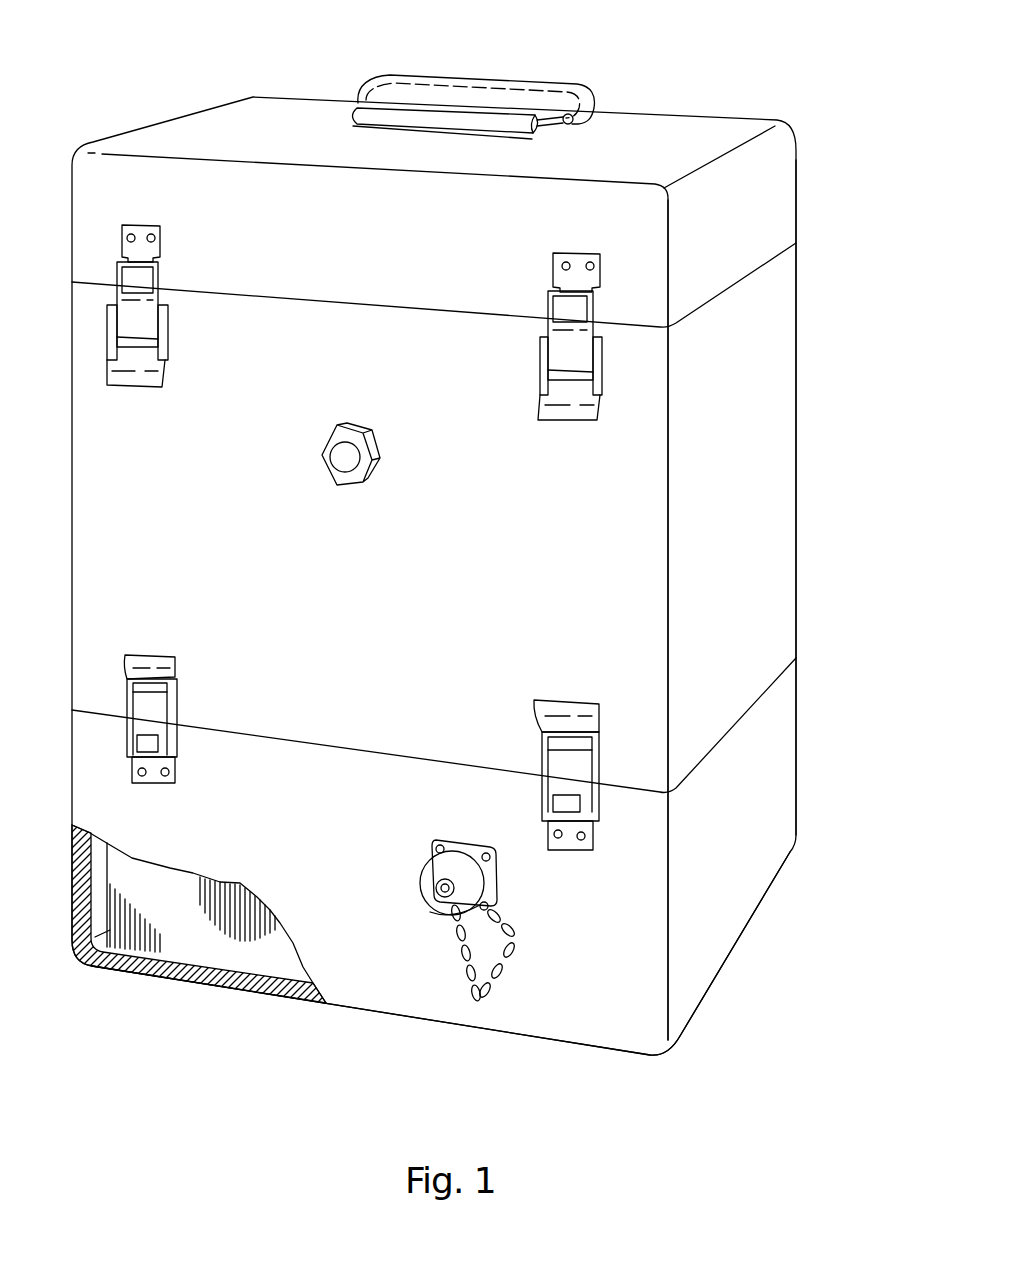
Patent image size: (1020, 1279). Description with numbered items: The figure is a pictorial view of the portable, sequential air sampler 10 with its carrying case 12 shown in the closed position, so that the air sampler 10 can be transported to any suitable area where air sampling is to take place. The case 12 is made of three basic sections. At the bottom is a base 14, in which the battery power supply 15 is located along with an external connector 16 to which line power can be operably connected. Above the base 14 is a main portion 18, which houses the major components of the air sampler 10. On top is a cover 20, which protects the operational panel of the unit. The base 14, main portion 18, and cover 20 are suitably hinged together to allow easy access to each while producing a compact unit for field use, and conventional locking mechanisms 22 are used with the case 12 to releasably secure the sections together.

The portable, sequential air sampler 10 is at (155, 999).
The carrying case 12 is at (806, 484).
The base 14 is at (715, 917).
The battery power supply 15 is at (212, 945).
The external connector 16 is at (418, 887).
The main portion 18 is at (763, 604).
The cover 20 is at (653, 87).
The locking mechanisms 22 is at (181, 314).